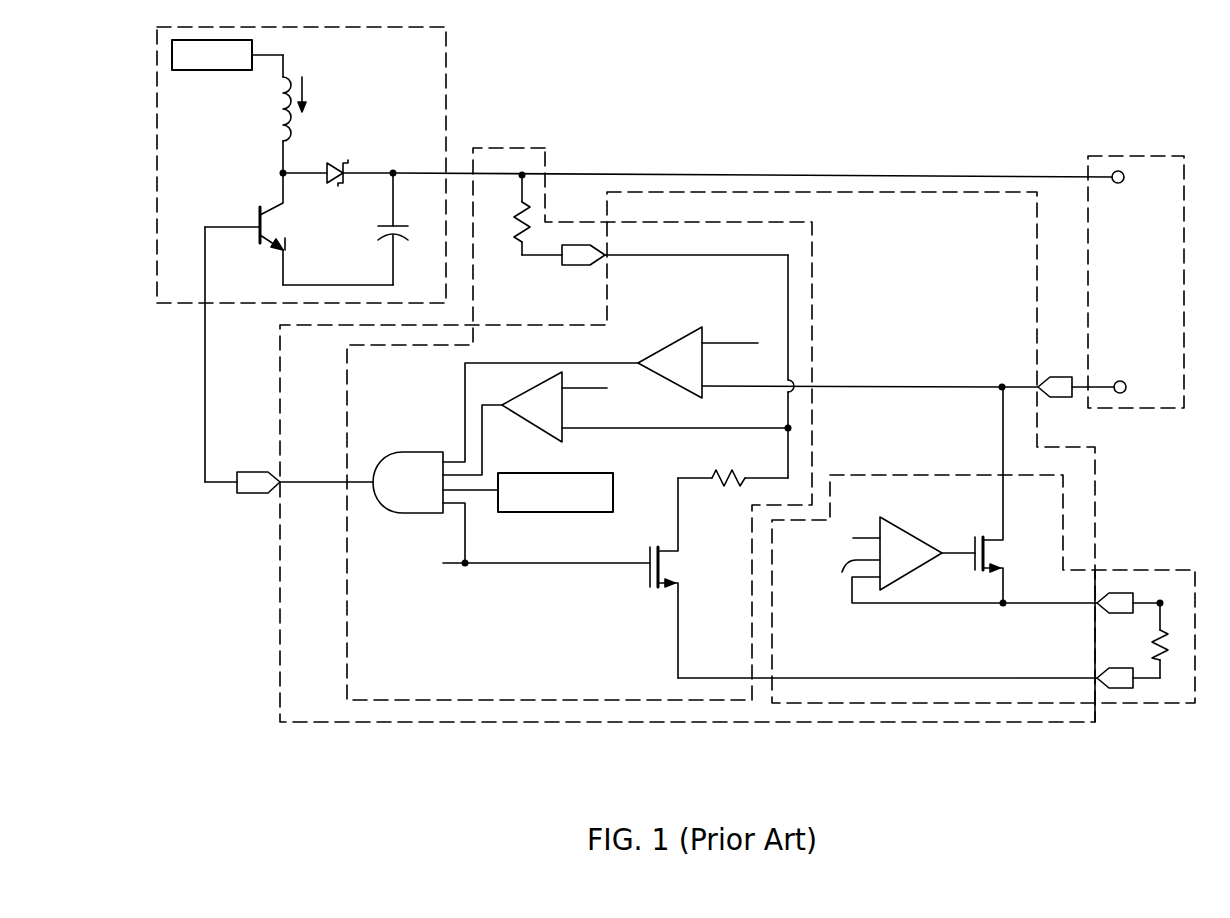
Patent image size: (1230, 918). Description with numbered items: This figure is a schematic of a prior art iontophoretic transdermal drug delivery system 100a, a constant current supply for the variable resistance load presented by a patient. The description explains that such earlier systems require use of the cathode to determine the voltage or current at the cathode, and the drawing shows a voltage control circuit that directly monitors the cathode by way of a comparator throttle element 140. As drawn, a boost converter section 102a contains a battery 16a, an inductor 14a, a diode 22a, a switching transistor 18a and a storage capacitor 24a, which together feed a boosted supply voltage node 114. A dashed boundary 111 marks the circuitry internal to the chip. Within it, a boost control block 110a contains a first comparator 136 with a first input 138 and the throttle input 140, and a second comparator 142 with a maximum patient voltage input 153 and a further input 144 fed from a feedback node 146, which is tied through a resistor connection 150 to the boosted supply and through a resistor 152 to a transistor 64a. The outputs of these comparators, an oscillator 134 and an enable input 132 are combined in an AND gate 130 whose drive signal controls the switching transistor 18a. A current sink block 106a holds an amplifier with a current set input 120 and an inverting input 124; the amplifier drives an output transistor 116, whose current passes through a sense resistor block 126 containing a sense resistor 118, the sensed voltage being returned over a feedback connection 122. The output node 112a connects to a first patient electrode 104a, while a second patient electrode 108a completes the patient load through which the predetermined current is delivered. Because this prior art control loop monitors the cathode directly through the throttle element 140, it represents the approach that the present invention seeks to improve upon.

The electrical stimulation circuit 100a is at (663, 72).
The boost converter section 102a is at (446, 77).
The battery VBATT 16a is at (210, 72).
The inductor 14a is at (281, 100).
The diode D1 22a is at (350, 162).
The transistor Q1 18a is at (270, 224).
The capacitor C1 24a is at (398, 221).
The circuitry internal to chip boundary 111 is at (823, 190).
The boost control circuitry 110a is at (812, 230).
The VBOOST node 114 is at (772, 175).
The first patient electrode 104a is at (1119, 185).
The second patient electrode 108a is at (1120, 379).
The IOUTP output node 112a is at (1000, 390).
The current sink circuitry 106a is at (917, 475).
The transistor MN1 116 is at (1005, 555).
The resistor R1 118 is at (1153, 638).
The I_SET input 120 is at (865, 535).
The feedback connection IOUTM 122 is at (953, 604).
The amplifier inverting input 124 is at (842, 572).
The sense resistor block 126 is at (1160, 573).
The AND gate 130 is at (423, 452).
The enable input 132 is at (540, 563).
The oscillator 134 is at (550, 473).
The comparator 136 is at (667, 347).
The comparator inverting input 138 is at (727, 387).
The throttle element 140 is at (716, 346).
The comparator 142 is at (533, 387).
The comparator inverting input 144 is at (588, 430).
The feedback node 146 is at (786, 432).
The resistor R2 connection 150 is at (513, 227).
The resistor R3 152 is at (717, 472).
The max patient voltage input 153 is at (578, 387).
The transistor MN2 64a is at (673, 568).